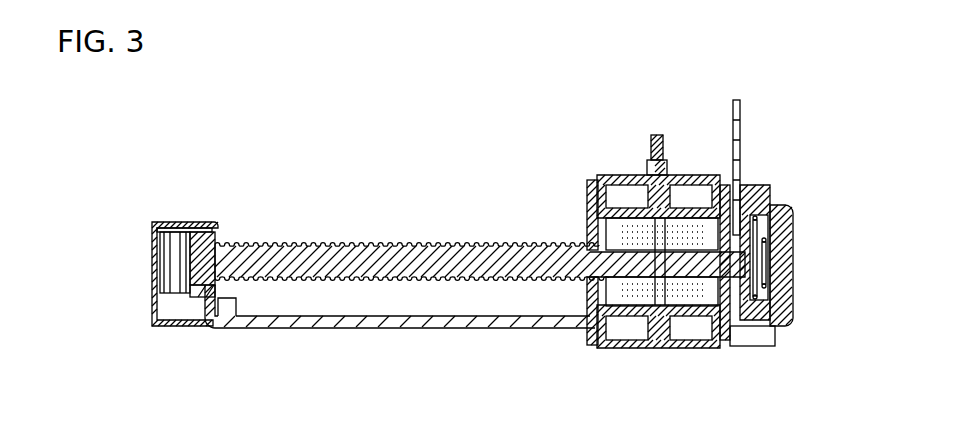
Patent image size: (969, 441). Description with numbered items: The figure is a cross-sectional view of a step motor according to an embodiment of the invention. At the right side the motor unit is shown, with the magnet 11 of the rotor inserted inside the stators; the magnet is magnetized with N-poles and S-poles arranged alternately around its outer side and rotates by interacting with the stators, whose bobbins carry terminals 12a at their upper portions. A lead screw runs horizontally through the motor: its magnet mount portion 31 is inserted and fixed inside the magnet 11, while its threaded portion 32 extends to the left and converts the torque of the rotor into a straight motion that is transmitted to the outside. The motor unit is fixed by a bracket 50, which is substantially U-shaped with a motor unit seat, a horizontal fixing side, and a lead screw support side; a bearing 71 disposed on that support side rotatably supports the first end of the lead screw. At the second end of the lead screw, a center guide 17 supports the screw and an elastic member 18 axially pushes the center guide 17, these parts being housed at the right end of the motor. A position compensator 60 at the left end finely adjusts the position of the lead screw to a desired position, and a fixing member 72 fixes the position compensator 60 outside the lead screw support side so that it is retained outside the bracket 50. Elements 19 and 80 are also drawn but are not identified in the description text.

The magnet 11 is at (622, 257).
The terminals 12a is at (651, 152).
The center guide 17 is at (748, 282).
The elastic member 18 is at (762, 220).
The end cap 19 is at (782, 330).
The magnet mount portion 31 is at (643, 233).
The threaded portion 32 is at (340, 240).
The bracket 50 is at (380, 320).
The position compensator 60 is at (182, 232).
The bearing 71 is at (195, 290).
The fixing member 72 is at (152, 232).
The sensor plate 80 is at (733, 122).